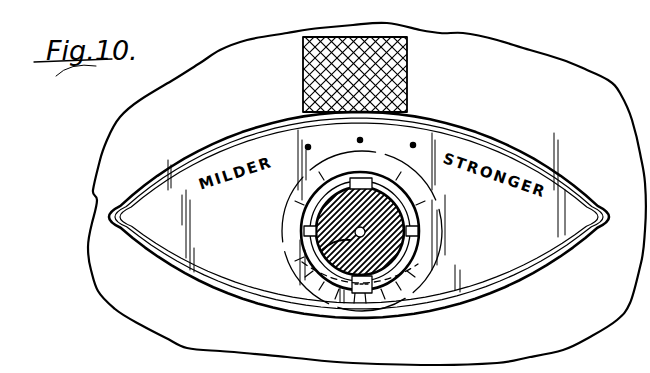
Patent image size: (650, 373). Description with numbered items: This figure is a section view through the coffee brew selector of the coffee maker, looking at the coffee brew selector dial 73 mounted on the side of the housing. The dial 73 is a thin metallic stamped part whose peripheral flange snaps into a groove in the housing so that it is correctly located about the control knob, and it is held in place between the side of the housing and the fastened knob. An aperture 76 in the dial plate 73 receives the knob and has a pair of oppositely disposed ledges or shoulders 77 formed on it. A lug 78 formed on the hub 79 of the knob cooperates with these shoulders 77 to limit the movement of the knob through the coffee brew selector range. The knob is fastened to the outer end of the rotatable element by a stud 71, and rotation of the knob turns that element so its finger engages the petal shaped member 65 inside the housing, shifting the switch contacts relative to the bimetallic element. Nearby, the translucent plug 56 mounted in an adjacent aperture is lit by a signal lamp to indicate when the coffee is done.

The translucent plug 56 is at (392, 69).
The petal shaped member 65 is at (402, 293).
The stud 71 is at (323, 268).
The coffee brew selector dial 73 is at (196, 265).
The aperture 76 is at (396, 194).
The ledges or shoulders 77 is at (304, 230).
The lug 78 is at (377, 184).
The hub 79 is at (416, 254).